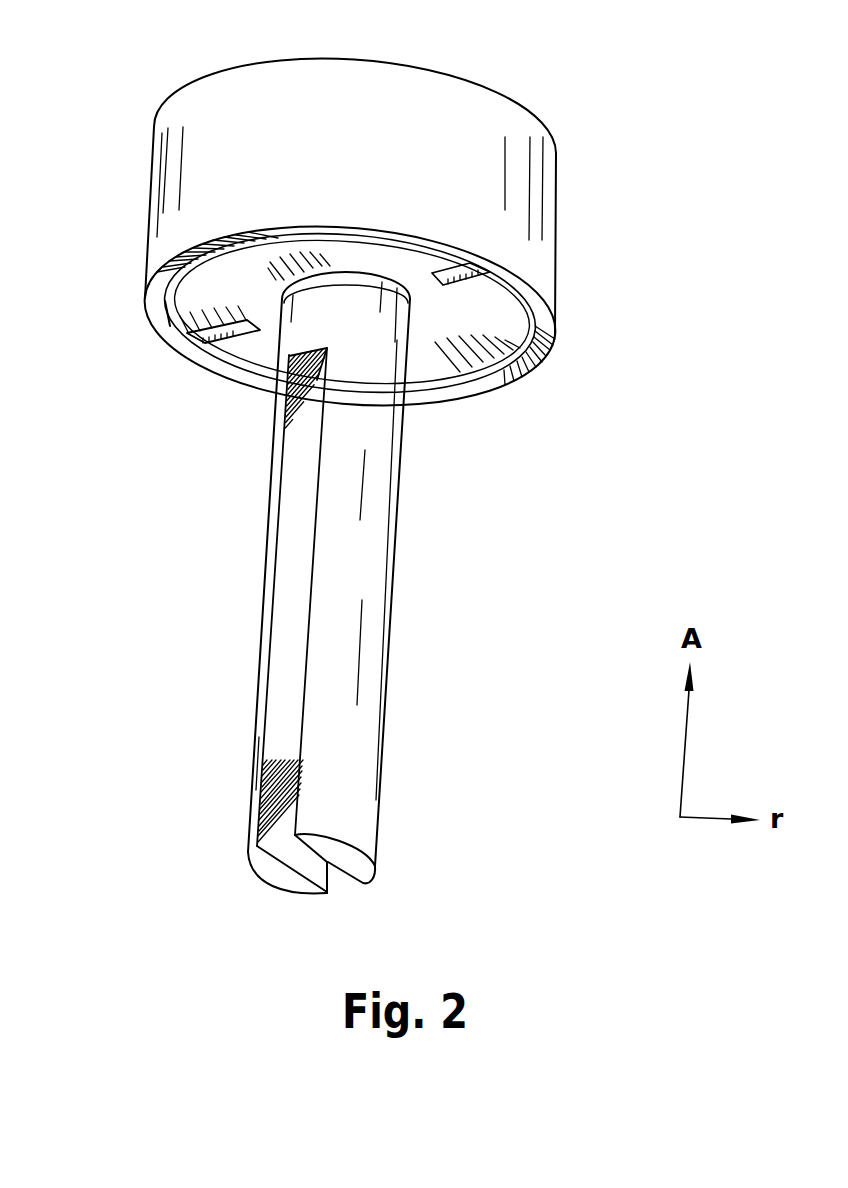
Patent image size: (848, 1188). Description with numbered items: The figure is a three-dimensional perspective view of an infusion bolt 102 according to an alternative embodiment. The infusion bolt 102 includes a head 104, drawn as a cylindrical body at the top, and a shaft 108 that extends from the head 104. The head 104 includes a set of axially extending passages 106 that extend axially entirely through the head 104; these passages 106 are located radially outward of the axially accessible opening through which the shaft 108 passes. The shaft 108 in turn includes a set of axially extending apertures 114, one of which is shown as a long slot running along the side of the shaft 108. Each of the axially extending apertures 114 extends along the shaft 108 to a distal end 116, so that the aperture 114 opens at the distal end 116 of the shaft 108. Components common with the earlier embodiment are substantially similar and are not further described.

The infusion bolt 102 is at (90, 76).
The head 104 is at (264, 162).
The axially extending passages 106 is at (229, 369).
The shaft 108 is at (391, 405).
The axially extending apertures 114 is at (266, 706).
The distal end 116 is at (348, 863).